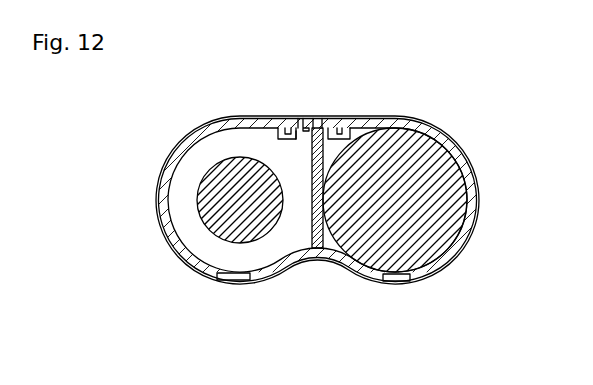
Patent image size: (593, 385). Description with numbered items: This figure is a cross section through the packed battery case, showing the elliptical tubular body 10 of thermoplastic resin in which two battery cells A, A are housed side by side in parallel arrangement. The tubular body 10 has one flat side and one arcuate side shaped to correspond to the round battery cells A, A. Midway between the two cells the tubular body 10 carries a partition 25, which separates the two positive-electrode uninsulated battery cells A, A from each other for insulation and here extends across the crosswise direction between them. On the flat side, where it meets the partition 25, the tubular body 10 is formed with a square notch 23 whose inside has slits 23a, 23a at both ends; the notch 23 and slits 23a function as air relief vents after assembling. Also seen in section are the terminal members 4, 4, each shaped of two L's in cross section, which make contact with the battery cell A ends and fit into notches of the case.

The tubular body 10 is at (468, 165).
The square notch 23 is at (318, 122).
The slits 23a is at (306, 122).
The partition 25 is at (286, 124).
The terminal members 4 is at (232, 282).
The battery cells A is at (192, 233).